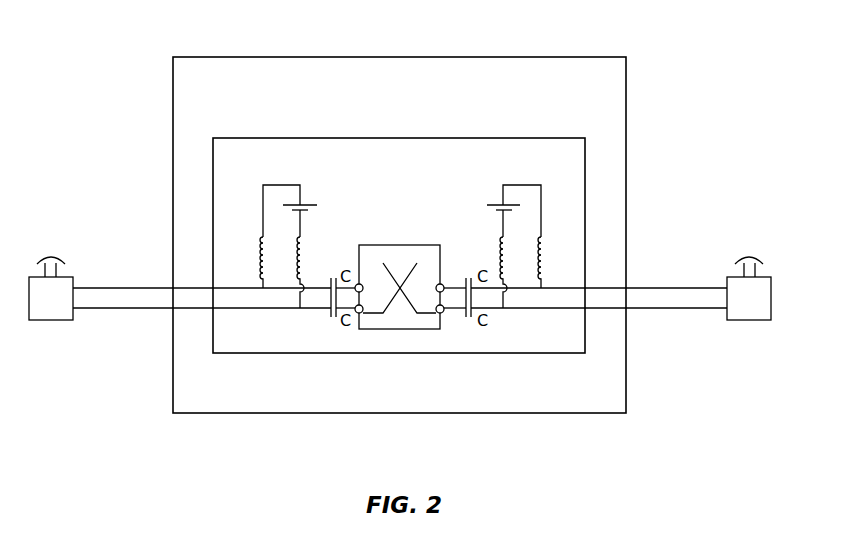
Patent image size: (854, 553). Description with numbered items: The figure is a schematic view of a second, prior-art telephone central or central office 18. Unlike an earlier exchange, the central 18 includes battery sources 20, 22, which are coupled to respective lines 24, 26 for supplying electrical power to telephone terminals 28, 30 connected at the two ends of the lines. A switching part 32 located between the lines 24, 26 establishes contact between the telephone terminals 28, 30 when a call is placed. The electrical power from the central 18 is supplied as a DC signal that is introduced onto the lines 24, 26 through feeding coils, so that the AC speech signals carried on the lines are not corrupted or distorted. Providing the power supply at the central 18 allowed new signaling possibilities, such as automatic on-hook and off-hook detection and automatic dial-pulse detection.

The telephone central office 18 is at (170, 50).
The battery source 20 is at (280, 185).
The battery source 22 is at (522, 185).
The line 24 is at (126, 288).
The line 26 is at (677, 288).
The telephone terminal 28 is at (50, 320).
The telephone terminal 30 is at (748, 320).
The switching part 32 is at (398, 329).